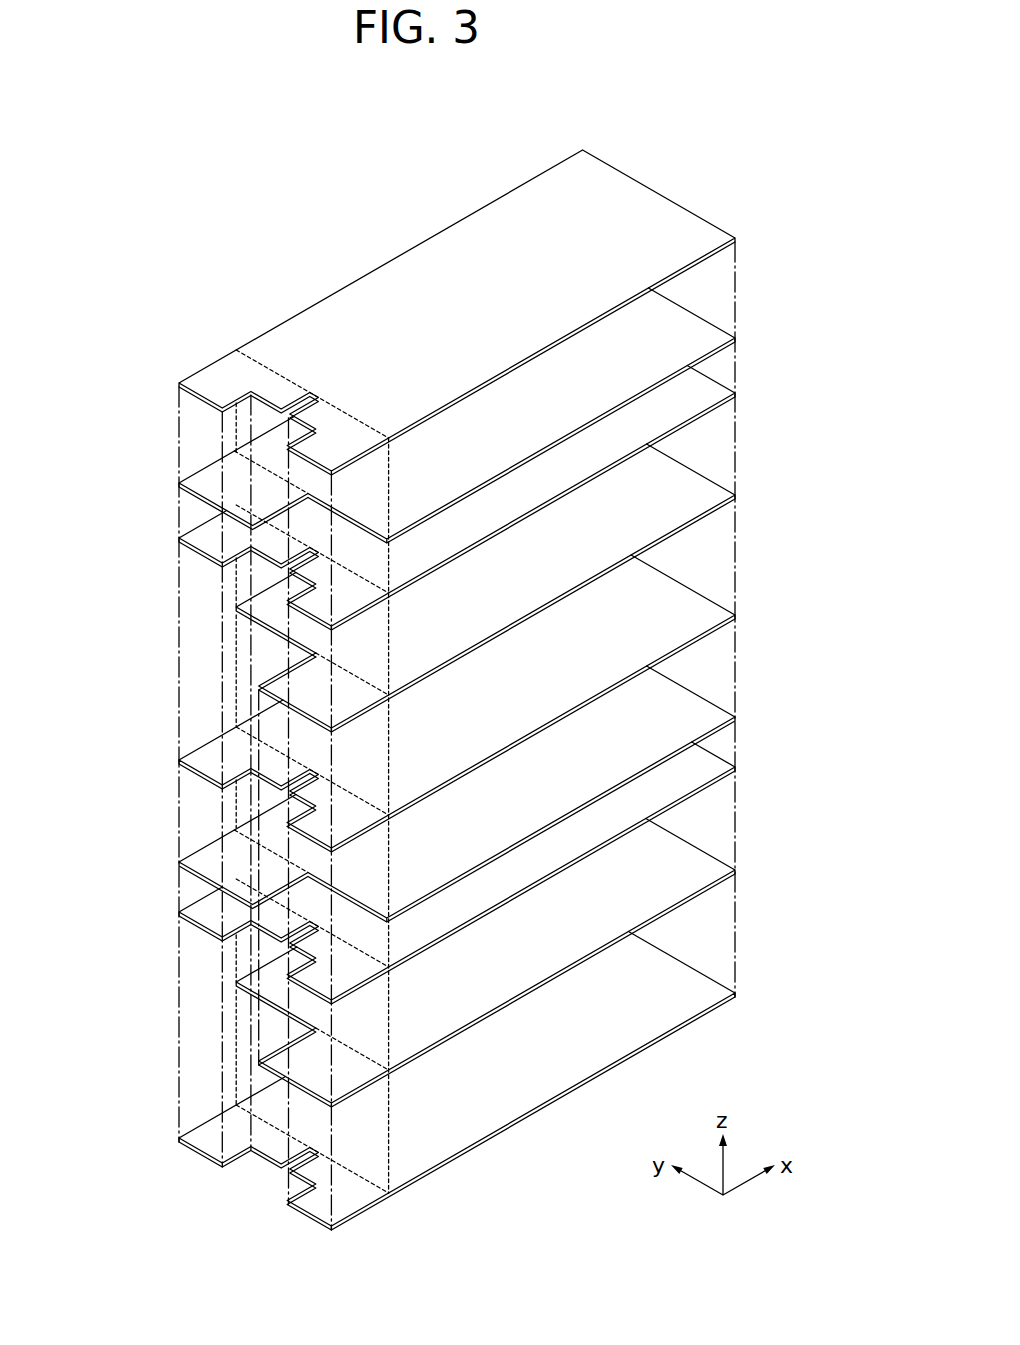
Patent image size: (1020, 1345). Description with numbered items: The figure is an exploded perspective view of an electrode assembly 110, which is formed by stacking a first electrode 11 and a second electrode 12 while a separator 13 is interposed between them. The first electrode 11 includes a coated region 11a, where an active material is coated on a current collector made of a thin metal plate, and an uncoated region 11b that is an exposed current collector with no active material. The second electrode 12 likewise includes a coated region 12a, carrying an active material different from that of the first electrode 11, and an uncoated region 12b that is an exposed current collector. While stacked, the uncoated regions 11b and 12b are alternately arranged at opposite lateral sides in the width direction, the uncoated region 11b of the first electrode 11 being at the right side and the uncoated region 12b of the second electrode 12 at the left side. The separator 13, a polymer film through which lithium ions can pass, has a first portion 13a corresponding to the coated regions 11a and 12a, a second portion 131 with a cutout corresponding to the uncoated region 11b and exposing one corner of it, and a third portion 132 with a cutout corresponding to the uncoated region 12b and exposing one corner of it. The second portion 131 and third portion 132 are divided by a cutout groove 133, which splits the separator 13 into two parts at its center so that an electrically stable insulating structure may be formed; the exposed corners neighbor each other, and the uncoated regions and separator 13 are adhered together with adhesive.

The electrode assembly 110 is at (378, 145).
The first electrode 11 is at (90, 655).
The coated region 11a is at (277, 617).
The uncoated region 11b is at (302, 687).
The second electrode 12 is at (90, 466).
The coated region 12a is at (358, 507).
The uncoated region 12b is at (215, 480).
The separator 13 is at (90, 745).
The first portion 13a is at (275, 722).
The second portion 131 is at (320, 825).
The third portion 132 is at (208, 763).
The cutout groove 133 is at (290, 783).